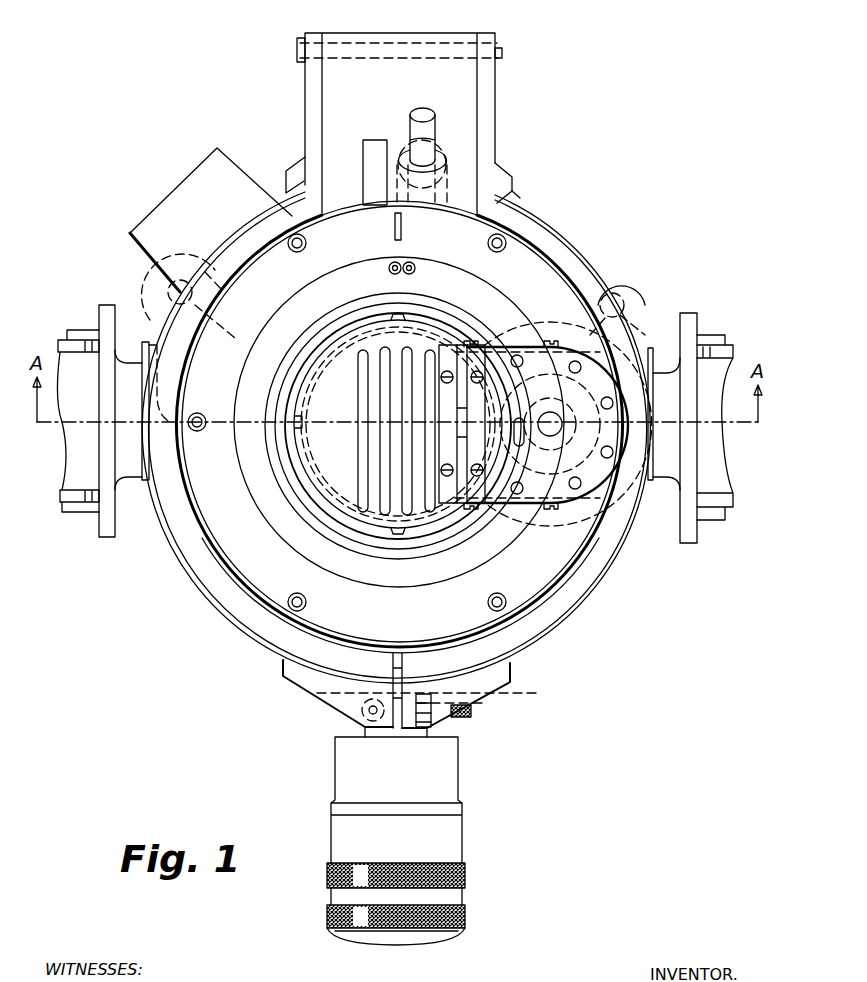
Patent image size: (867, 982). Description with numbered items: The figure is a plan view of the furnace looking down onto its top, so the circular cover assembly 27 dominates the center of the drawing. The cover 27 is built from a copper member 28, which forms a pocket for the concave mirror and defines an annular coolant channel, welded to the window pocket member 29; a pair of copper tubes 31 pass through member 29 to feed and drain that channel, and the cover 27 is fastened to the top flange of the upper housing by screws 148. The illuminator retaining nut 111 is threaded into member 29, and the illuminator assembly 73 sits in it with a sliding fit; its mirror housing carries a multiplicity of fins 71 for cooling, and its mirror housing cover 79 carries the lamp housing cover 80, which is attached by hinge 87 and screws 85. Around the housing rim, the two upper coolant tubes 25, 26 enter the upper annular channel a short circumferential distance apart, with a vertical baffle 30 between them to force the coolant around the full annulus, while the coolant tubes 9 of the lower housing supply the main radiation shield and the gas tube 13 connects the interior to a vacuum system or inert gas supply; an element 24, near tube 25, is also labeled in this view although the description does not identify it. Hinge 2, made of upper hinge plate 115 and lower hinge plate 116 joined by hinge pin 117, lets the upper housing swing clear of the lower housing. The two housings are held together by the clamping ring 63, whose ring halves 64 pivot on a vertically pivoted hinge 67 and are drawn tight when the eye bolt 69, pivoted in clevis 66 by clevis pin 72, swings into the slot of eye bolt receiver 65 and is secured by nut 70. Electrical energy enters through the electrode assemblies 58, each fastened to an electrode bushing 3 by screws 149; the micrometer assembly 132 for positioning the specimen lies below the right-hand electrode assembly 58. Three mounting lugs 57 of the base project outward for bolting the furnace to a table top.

The hinge 2 is at (400, 108).
The electrode bushings 3 is at (689, 312).
The coolant tubes 9 is at (147, 340).
The gas tube 13 is at (232, 180).
The bushing 24 is at (415, 192).
The coolant tube 25 is at (425, 130).
The coolant tube 26 is at (368, 165).
The cover assembly 27 is at (452, 262).
The member 28 is at (565, 242).
The window pocket member 29 is at (514, 300).
The vertical baffle 30 is at (403, 233).
The copper tubes 31 is at (409, 262).
The mounting lugs 57 is at (165, 290).
The electrode assemblies 58 is at (698, 413).
The clamping ring 63 is at (411, 703).
The ring halves 64 is at (205, 572).
The eye bolt receiver 65 is at (512, 672).
The clevis 66 is at (325, 706).
The vertically pivoted hinge 67 is at (513, 183).
The eye bolt 69 is at (472, 710).
The nut 70 is at (432, 722).
The fins 71 is at (322, 316).
The clevis pin 72 is at (350, 718).
The illuminator assembly 73 is at (500, 500).
The mirror housing cover 79 is at (300, 360).
The lamp housing cover 80 is at (608, 378).
The screws 85 is at (548, 345).
The hinge 87 is at (478, 338).
The illuminator retaining nut 111 is at (472, 556).
The upper hinge plate 115 is at (365, 44).
The lower hinge plate 116 is at (303, 75).
The hinge pin 117 is at (503, 50).
The micrometer assembly 132 is at (460, 840).
The screws 148 is at (307, 602).
The screws 149 is at (713, 346).